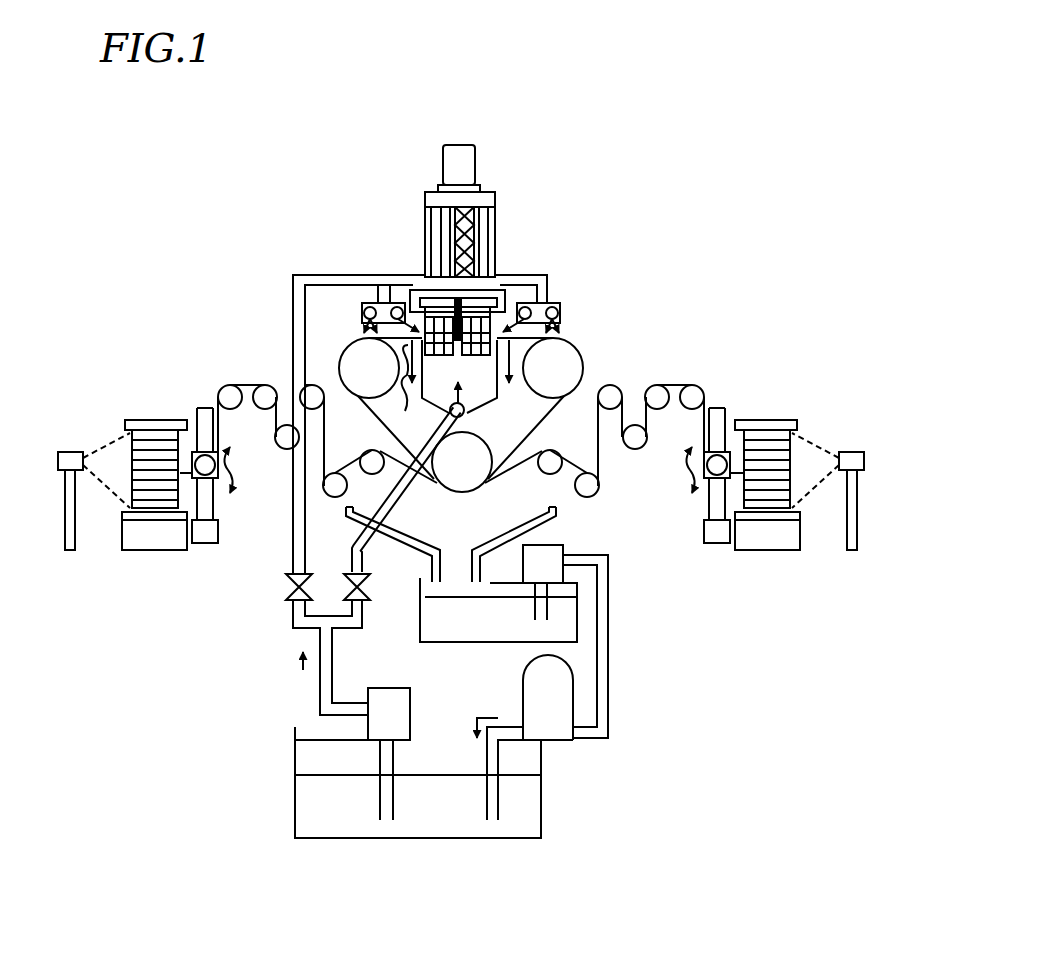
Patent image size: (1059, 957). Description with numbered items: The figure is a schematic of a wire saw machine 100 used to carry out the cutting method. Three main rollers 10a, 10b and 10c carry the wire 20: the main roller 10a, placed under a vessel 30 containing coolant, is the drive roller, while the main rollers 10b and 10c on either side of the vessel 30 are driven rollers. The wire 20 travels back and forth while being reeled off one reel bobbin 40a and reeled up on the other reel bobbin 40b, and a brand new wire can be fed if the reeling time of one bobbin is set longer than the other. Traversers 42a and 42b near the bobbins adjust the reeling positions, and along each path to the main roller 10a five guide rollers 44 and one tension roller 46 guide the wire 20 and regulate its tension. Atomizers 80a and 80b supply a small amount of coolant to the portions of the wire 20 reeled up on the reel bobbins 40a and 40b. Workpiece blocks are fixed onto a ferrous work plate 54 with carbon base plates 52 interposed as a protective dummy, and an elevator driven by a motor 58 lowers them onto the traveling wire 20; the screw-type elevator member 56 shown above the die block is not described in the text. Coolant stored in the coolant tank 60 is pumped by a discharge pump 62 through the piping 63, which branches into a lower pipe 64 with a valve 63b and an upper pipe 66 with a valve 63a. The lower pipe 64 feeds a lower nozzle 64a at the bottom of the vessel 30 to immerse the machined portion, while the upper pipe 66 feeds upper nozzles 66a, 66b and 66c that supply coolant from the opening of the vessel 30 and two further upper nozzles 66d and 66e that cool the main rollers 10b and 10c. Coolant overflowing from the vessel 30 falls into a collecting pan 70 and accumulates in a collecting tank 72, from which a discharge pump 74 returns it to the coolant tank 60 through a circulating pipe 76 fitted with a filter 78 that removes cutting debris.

The wire saw machine 100 is at (463, 456).
The main roller 10a is at (463, 490).
The main roller 10b is at (348, 356).
The main roller 10c is at (572, 356).
The wire 20 is at (494, 478).
The vessel 30 is at (500, 398).
The reel bobbin 40a is at (130, 420).
The reel bobbin 40b is at (770, 420).
The traverser 42a is at (200, 407).
The traverser 42b is at (718, 407).
The guide roller 44 is at (231, 390).
The tension roller 46 is at (286, 444).
The carbon base plate 52 is at (488, 300).
The work plate 54 is at (482, 293).
The feed screw 56 is at (478, 240).
The motor 58 is at (443, 162).
The coolant tank 60 is at (543, 808).
The discharge pump 62 is at (410, 698).
The piping 63 is at (320, 704).
The valve 63a is at (286, 588).
The valve 63b is at (365, 593).
The lower pipe 64 is at (393, 507).
The lower nozzle 64a is at (464, 412).
The upper pipe 66 is at (293, 292).
The upper nozzle 66a is at (460, 295).
The upper nozzle 66b is at (402, 302).
The upper nozzle 66c is at (538, 300).
The upper nozzle 66d is at (368, 302).
The upper nozzle 66e is at (560, 305).
The collecting pan 70 is at (562, 517).
The collecting tank 72 is at (577, 622).
The discharge pump 74 is at (563, 572).
The circulating pipe 76 is at (608, 662).
The filter 78 is at (573, 711).
The atomizer 80a is at (61, 446).
The atomizer 80b is at (852, 446).